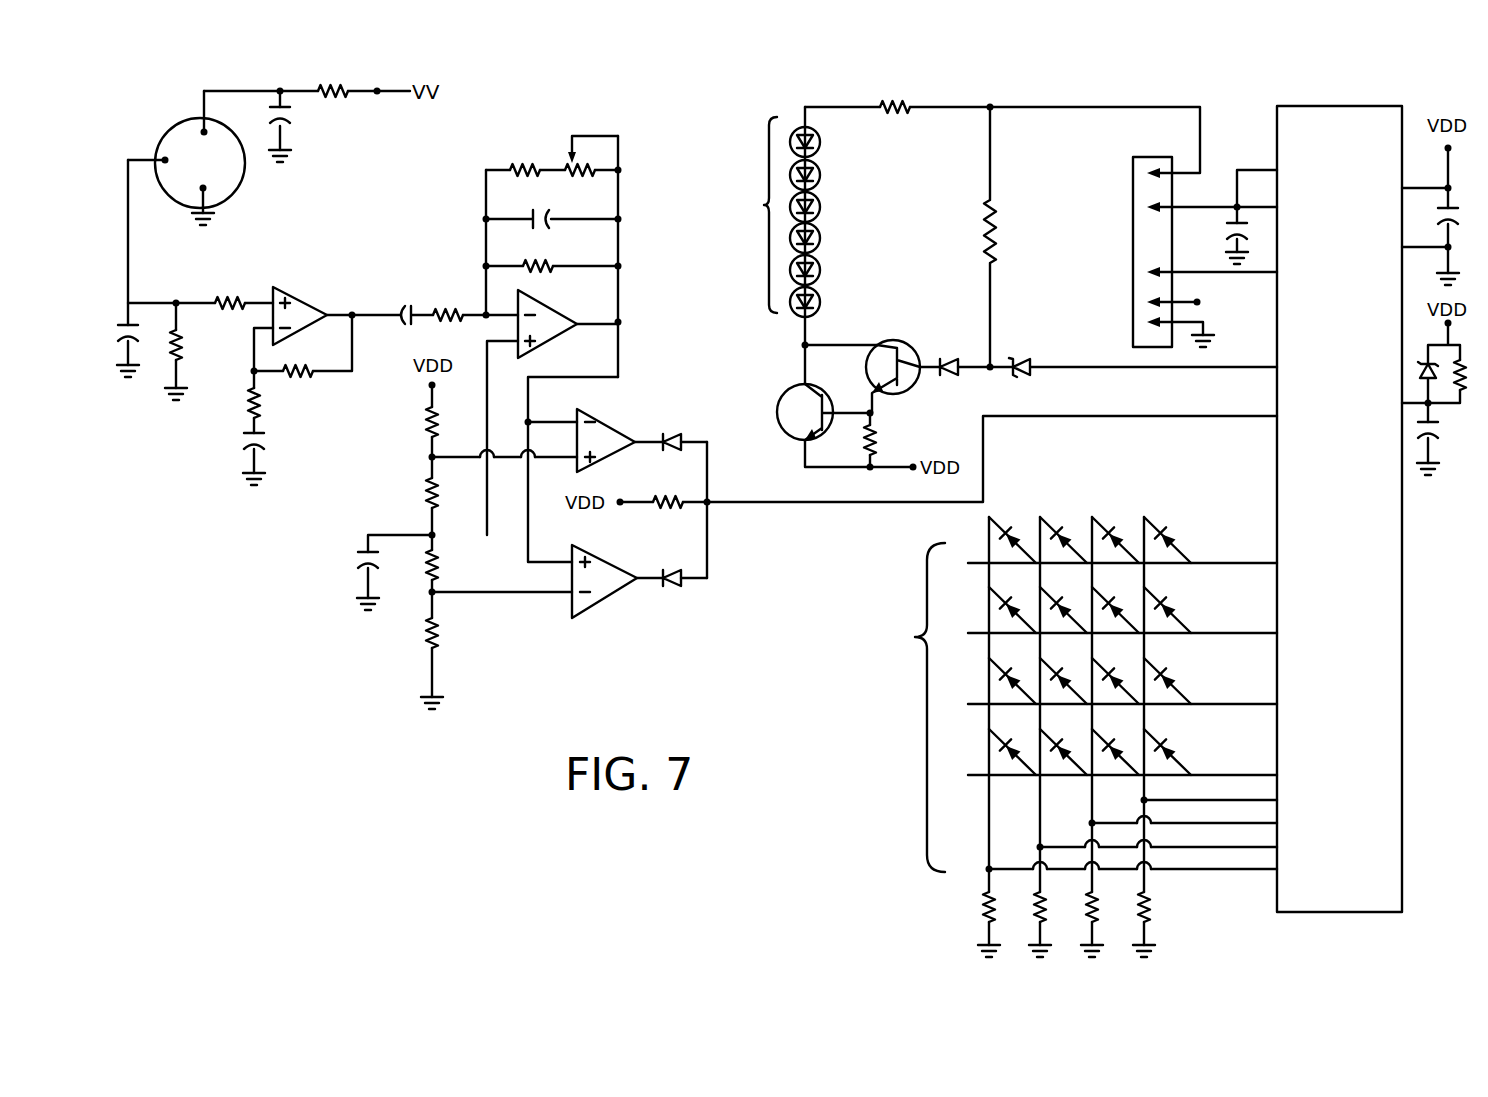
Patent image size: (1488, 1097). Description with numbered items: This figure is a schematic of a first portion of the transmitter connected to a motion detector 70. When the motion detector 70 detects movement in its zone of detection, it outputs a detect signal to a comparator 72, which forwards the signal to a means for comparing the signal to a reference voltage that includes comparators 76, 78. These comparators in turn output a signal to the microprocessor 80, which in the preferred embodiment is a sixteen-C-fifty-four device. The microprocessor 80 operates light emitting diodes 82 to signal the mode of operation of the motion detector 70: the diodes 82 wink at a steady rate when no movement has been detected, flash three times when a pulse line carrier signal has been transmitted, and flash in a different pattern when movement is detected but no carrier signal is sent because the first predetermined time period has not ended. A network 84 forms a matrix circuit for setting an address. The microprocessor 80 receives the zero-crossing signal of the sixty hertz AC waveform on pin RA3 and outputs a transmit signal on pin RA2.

The motion detector 70 is at (179, 122).
The comparator 72 is at (300, 294).
The comparator 76 is at (606, 424).
The comparator 78 is at (612, 595).
The microprocessor 80 is at (1276, 108).
The light emitting diodes 82 is at (776, 245).
The network 84 is at (1077, 737).